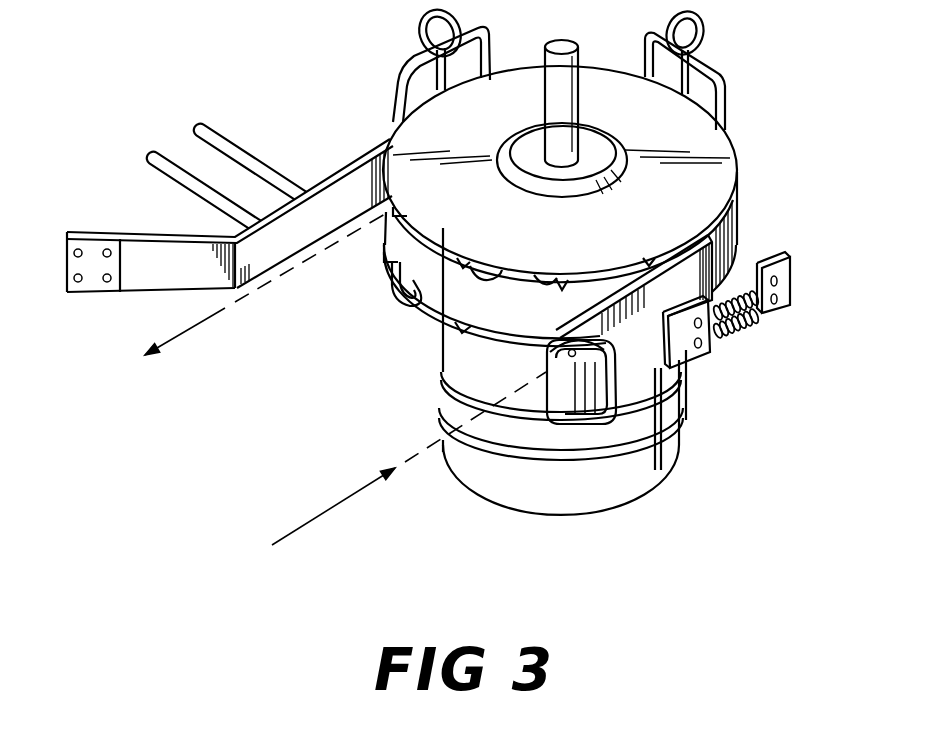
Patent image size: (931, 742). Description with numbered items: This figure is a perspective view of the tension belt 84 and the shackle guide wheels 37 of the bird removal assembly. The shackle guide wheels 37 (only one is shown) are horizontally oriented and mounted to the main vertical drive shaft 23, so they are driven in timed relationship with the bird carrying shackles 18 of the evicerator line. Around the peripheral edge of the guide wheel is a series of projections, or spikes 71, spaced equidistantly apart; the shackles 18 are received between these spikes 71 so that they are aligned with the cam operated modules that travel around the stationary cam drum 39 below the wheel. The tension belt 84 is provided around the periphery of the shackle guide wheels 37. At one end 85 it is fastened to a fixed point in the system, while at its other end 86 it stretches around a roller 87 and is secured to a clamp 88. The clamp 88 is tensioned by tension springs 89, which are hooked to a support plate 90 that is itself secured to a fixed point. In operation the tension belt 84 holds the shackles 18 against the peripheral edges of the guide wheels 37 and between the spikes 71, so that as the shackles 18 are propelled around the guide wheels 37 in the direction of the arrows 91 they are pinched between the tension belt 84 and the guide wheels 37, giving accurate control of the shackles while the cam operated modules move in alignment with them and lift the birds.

The bird carrying shackles 18 is at (412, 68).
The main vertical drive shaft 23 is at (578, 66).
The shackle guide wheels 37 is at (447, 312).
The stationary cam drum 39 is at (661, 468).
The spikes 71 is at (568, 278).
The tension belt 84 is at (306, 230).
The one end 85 is at (190, 293).
The other end 86 is at (648, 374).
The roller 87 is at (540, 420).
The clamp 88 is at (678, 357).
The tension springs 89 is at (757, 325).
The support plate 90 is at (783, 274).
The arrows 91 is at (238, 306).